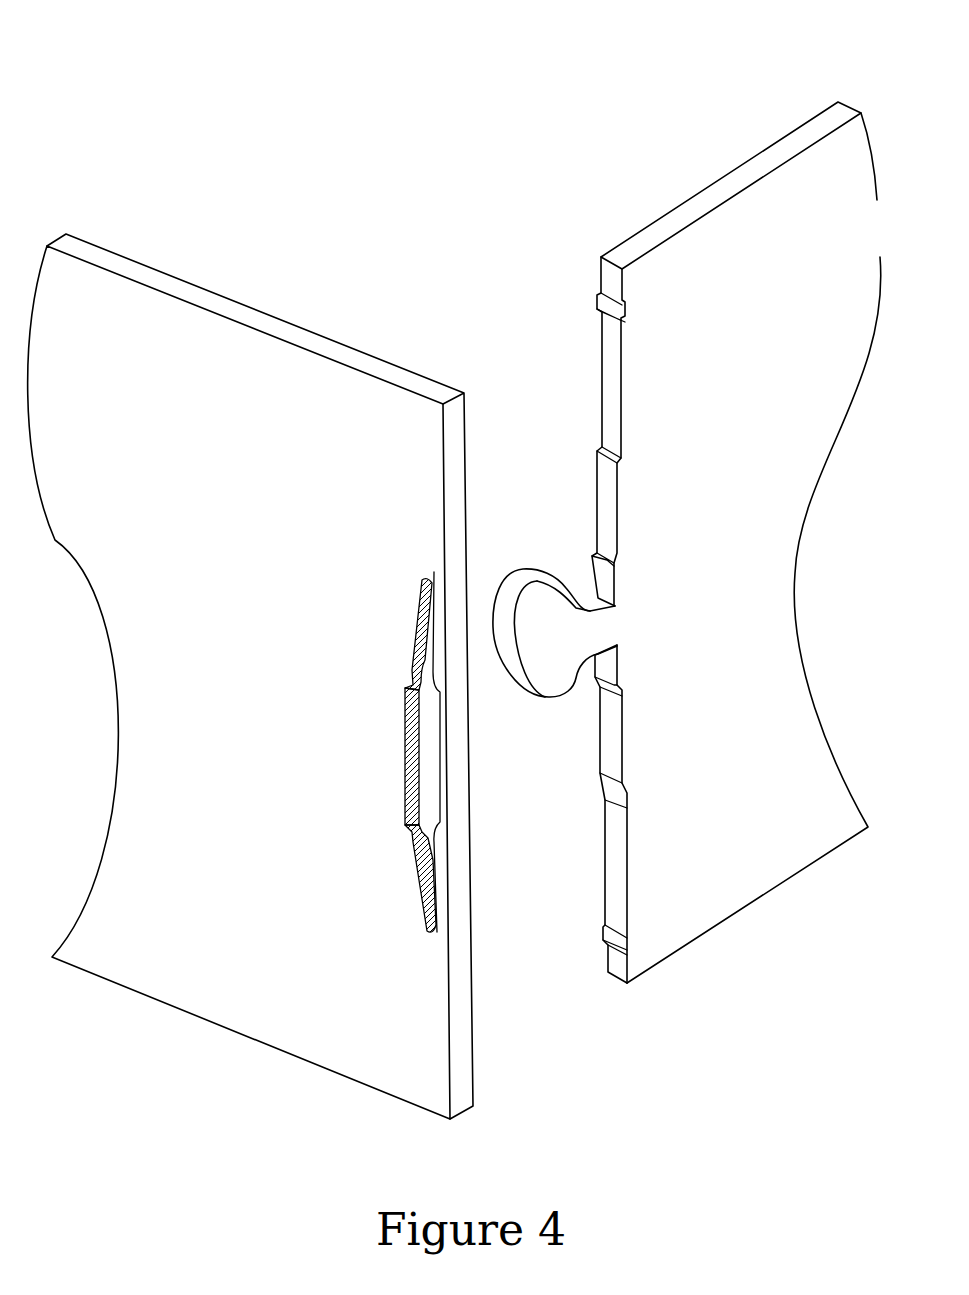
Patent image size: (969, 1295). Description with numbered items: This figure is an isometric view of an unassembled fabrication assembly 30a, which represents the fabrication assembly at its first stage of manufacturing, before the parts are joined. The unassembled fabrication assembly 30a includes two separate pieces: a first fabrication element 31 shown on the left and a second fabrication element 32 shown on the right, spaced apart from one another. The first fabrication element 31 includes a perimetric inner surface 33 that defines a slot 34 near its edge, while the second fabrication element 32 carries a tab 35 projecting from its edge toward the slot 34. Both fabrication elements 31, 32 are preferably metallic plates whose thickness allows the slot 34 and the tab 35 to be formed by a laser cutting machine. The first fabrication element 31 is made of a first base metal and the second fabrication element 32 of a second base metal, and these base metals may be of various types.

The unassembled fabrication assembly 30a is at (728, 118).
The first fabrication element 31 is at (460, 410).
The second fabrication element 32 is at (598, 282).
The perimetric inner surface 33 is at (412, 676).
The slot 34 is at (404, 756).
The tab 35 is at (540, 687).